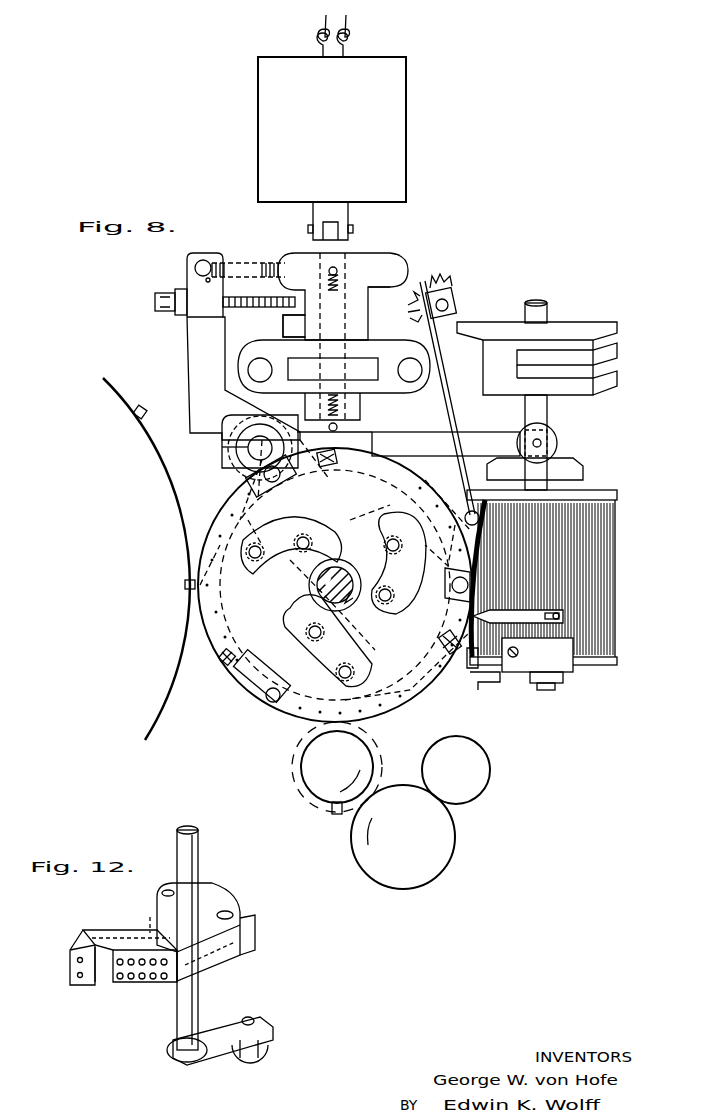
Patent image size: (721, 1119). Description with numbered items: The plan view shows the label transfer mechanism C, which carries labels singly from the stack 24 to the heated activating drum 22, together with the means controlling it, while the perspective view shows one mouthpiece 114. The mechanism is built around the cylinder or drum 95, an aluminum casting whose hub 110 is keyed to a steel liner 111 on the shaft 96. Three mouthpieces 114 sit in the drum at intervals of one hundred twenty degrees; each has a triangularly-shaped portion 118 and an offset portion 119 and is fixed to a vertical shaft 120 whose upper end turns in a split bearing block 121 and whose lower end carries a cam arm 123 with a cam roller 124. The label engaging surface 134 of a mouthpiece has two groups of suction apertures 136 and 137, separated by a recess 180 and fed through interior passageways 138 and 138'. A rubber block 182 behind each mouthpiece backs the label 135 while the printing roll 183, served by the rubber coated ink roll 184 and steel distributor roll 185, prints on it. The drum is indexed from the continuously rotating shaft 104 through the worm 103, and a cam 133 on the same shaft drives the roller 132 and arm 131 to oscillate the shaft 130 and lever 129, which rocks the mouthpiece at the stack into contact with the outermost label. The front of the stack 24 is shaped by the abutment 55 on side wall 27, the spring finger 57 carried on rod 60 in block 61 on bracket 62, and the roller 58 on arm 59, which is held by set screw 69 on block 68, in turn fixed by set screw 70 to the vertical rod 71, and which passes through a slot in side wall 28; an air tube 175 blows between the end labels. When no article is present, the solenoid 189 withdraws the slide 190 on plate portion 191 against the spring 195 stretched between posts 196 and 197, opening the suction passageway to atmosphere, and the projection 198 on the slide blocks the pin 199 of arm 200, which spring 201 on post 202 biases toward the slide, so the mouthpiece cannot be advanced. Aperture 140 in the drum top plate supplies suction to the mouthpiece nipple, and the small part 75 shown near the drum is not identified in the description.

In FIG. 8, the solenoid 189 is at (332, 108).
In FIG. 8, the post 196 is at (350, 240).
In FIG. 8, the slide 190 is at (350, 283).
In FIG. 8, the plate portion 191 is at (388, 270).
In FIG. 8, the spring 195 is at (340, 405).
In FIG. 8, the post 197 is at (340, 428).
In FIG. 8, the projection 198 is at (290, 327).
In FIG. 8, the arm 131 is at (412, 432).
In FIG. 8, the arm 200 is at (187, 345).
In FIG. 8, the pin 199 is at (250, 308).
In FIG. 8, the spring 201 is at (258, 262).
In FIG. 8, the post 202 is at (203, 260).
In FIG. 8, the shaft 130 is at (258, 448).
In FIG. 8, the arm 59 is at (453, 420).
In FIG. 8, the roller 58 is at (468, 510).
In FIG. 8, the block 68 is at (454, 296).
In FIG. 8, the vertical rod 71 is at (449, 305).
In FIG. 8, the set screw 70 is at (450, 276).
In FIG. 8, the set screw 69 is at (412, 296).
In FIG. 8, the shaft 104 is at (548, 310).
In FIG. 8, the worm 103 is at (596, 350).
In FIG. 8, the roller 132 is at (553, 440).
In FIG. 8, the cam 133 is at (578, 470).
In FIG. 8, the side wall 28 is at (598, 492).
In FIG. 8, the label stack 24 is at (605, 553).
In FIG. 8, the side wall 27 is at (605, 666).
In FIG. 8, the spring finger 57 is at (518, 615).
In FIG. 8, the rod 60 is at (562, 628).
In FIG. 8, the block 61 is at (537, 655).
In FIG. 8, the bracket 62 is at (558, 678).
In FIG. 8, the abutment 55 is at (472, 670).
In FIG. 8, the tube 175 is at (488, 683).
In FIG. 8, the heated activating drum 22 is at (166, 475).
In FIG. 8, the stud 75 is at (138, 406).
In FIG. 8, the aperture 140 is at (383, 706).
In FIG. 8, the cylinder 95 is at (418, 700).
In FIG. 8, the label pick-up mechanism C is at (419, 708).
In FIG. 8, the hub portion 110 is at (309, 585).
In FIG. 8, the steel liner 111 is at (352, 600).
In FIG. 8, the shaft 96 is at (344, 560).
In FIG. 8, the lever 129 is at (336, 512).
In FIG. 8, the cam arm 123 is at (342, 599).
In FIG. 12, the cam arm 123 is at (262, 1018).
In FIG. 8, the label 135 is at (197, 612).
In FIG. 8, the mouthpiece 114 is at (328, 467).
In FIG. 12, the mouthpiece 114 is at (248, 937).
In FIG. 8, the rubber block 182 is at (222, 664).
In FIG. 8, the split bearing block 121 is at (250, 680).
In FIG. 8, the shaft 120 is at (268, 700).
In FIG. 12, the shaft 120 is at (200, 862).
In FIG. 8, the printing roll 183 is at (302, 782).
In FIG. 8, the ink roll 184 is at (385, 882).
In FIG. 8, the distributor roll 185 is at (490, 772).
In FIG. 12, the triangularly-shaped portion 118 is at (212, 897).
In FIG. 12, the offset portion 119 is at (133, 928).
In FIG. 12, the recess 180 is at (104, 945).
In FIG. 12, the interior passageways 138 is at (105, 949).
In FIG. 12, the suction apertures 136 is at (76, 961).
In FIG. 12, the suction apertures 137 is at (146, 980).
In FIG. 12, the label engaging surface 134 is at (122, 982).
In FIG. 12, the interior passageways 138' is at (225, 961).
In FIG. 12, the cam roller 124 is at (270, 1047).